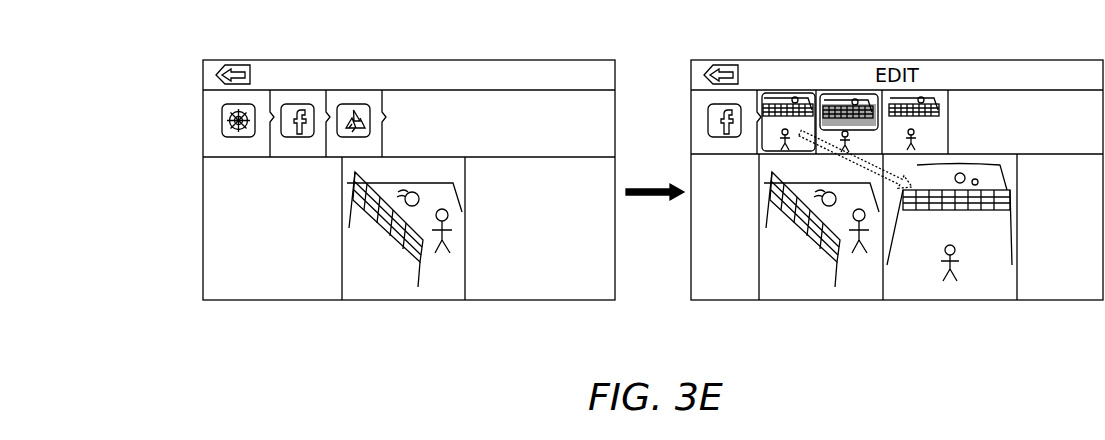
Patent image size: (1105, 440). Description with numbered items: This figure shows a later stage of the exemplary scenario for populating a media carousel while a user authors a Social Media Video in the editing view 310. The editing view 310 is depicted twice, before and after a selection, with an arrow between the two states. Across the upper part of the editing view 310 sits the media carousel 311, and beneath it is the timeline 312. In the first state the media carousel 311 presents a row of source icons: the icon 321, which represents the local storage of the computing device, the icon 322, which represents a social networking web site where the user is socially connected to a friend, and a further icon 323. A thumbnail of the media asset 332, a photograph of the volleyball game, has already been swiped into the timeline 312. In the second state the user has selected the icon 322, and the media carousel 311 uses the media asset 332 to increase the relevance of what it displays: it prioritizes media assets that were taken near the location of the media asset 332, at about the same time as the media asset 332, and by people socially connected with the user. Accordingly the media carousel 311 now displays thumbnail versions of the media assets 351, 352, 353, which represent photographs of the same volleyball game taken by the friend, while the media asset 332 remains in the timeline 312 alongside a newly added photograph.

The editing view 310 is at (188, 52).
The media carousel 311 is at (188, 122).
The timeline 312 is at (198, 212).
The icon 321 is at (254, 92).
The icon 322 is at (310, 95).
The recycle icon 323 is at (370, 95).
The media asset 332 is at (357, 288).
The media asset 351 is at (812, 92).
The media asset 352 is at (852, 92).
The media asset 353 is at (918, 92).